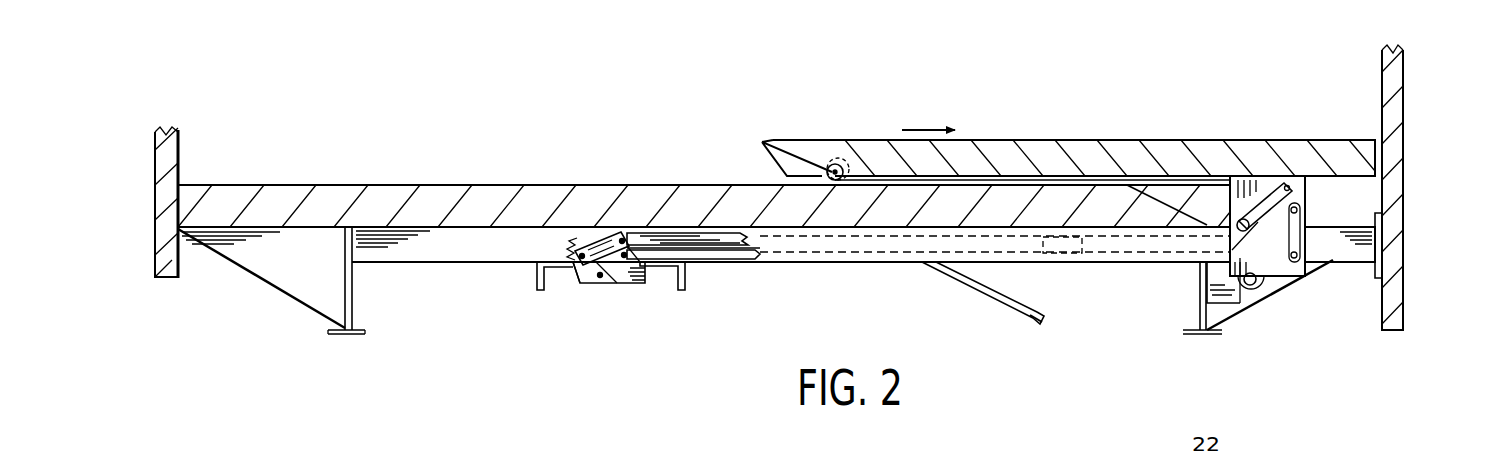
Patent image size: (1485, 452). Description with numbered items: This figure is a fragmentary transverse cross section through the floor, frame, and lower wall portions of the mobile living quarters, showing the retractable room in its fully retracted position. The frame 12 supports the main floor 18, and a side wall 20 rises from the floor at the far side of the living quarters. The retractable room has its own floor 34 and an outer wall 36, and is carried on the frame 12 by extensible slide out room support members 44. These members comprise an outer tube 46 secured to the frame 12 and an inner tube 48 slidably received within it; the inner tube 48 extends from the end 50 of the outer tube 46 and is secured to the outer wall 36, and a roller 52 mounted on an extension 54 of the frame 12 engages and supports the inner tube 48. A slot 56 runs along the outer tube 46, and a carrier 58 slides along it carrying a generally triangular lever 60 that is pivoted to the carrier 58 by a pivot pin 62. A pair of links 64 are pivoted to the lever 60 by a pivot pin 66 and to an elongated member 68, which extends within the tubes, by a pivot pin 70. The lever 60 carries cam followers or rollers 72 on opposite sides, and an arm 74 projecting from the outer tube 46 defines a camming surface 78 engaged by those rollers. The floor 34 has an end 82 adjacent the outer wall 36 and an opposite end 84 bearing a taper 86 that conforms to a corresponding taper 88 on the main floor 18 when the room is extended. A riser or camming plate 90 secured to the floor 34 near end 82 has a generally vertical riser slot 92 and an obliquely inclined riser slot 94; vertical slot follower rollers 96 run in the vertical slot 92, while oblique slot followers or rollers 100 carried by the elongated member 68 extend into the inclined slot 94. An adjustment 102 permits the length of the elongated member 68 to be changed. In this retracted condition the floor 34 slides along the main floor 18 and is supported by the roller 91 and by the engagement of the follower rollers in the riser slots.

The frame 12 is at (334, 334).
The main floor 18 is at (335, 183).
The side wall 20 is at (183, 149).
The floor 34 is at (1058, 152).
The outer wall 36 is at (1392, 283).
The extensible slide out room support members 44 is at (487, 272).
The outer tube 46 is at (425, 240).
The inner tube 48 is at (1345, 252).
The end of the outer tube 50 is at (1214, 294).
The roller 52 is at (1262, 284).
The extension 54 is at (1234, 303).
The slot 56 is at (740, 262).
The carrier 58 is at (636, 272).
The triangular lever 60 is at (612, 276).
The pivot pin 62 is at (592, 271).
The links 64 is at (607, 250).
The pivot pin 66 is at (580, 237).
The elongated member 68 is at (681, 246).
The pivot pin 70 is at (638, 260).
The cam followers or rollers 72 is at (685, 292).
The arm 74 is at (978, 283).
The camming surface 78 is at (1012, 284).
The end of the floor 82 is at (1372, 150).
The opposite end of the floor 84 is at (766, 140).
The taper 86 is at (803, 166).
The taper 88 is at (1172, 205).
The riser or camming plate 90 is at (1255, 182).
The roller 91 is at (803, 189).
The vertical riser slot 92 is at (1302, 212).
The obliquely inclined riser slot 94 is at (1287, 200).
The vertical slot follower rollers 96 is at (1290, 263).
The oblique slot followers or rollers 100 is at (1238, 219).
The adjustment 102 is at (1080, 256).